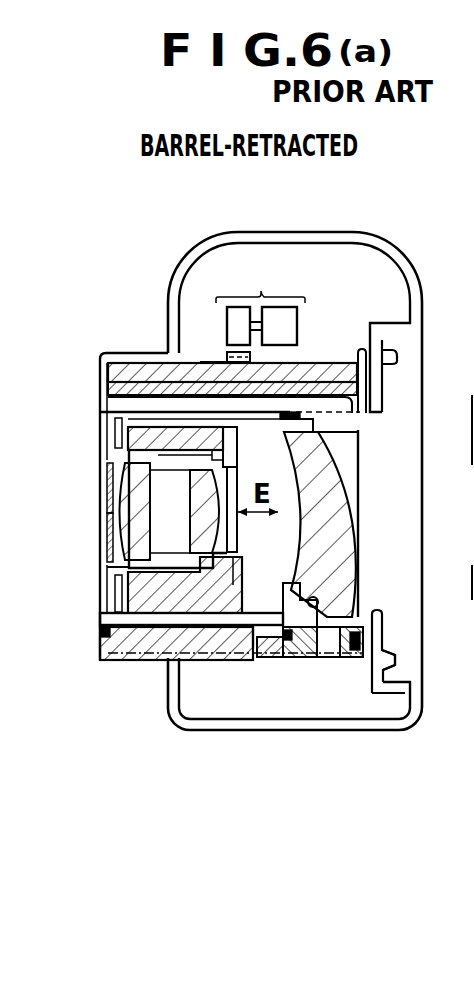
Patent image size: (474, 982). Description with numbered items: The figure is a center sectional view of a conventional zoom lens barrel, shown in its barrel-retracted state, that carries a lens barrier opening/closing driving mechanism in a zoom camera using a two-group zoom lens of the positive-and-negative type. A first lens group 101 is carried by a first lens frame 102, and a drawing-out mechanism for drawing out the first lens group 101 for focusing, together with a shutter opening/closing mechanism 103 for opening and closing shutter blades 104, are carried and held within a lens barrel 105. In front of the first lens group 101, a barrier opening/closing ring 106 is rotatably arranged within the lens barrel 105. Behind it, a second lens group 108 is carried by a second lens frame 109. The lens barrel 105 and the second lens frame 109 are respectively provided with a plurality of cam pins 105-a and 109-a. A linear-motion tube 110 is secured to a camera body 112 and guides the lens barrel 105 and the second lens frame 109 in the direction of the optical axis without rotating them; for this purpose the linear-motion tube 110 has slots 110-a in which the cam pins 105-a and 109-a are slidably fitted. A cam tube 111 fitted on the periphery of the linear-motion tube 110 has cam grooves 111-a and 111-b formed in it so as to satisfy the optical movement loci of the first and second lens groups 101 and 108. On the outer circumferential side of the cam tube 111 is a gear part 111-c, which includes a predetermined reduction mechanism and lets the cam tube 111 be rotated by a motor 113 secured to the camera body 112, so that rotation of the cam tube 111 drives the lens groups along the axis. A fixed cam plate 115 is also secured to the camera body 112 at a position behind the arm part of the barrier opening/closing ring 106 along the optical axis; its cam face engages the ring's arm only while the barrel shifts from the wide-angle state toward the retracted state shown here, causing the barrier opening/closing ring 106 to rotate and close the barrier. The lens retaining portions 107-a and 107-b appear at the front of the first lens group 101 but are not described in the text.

The first lens group 101 is at (162, 520).
The first lens frame 102 is at (145, 640).
The shutter opening/closing mechanism 103 is at (218, 645).
The shutter blades 104 is at (244, 532).
The lens barrel 105 is at (200, 600).
The cam pins 105-a is at (283, 662).
The barrier opening/closing ring 106 is at (120, 353).
The lens retaining portion 107-a is at (108, 489).
The lens retaining portion 107-b is at (106, 536).
The second lens group 108 is at (323, 490).
The second lens frame 109 is at (323, 583).
The cam pins 109-a is at (365, 690).
The linear-motion tube 110 is at (155, 365).
The slots 110-a is at (190, 662).
The cam tube 111 is at (312, 365).
The cam groove 111-a is at (271, 660).
The cam groove 111-b is at (335, 662).
The gear part 111-c is at (222, 360).
The camera body 112 is at (296, 230).
The motor 113 is at (260, 310).
The fixed cam plate 115 is at (338, 365).